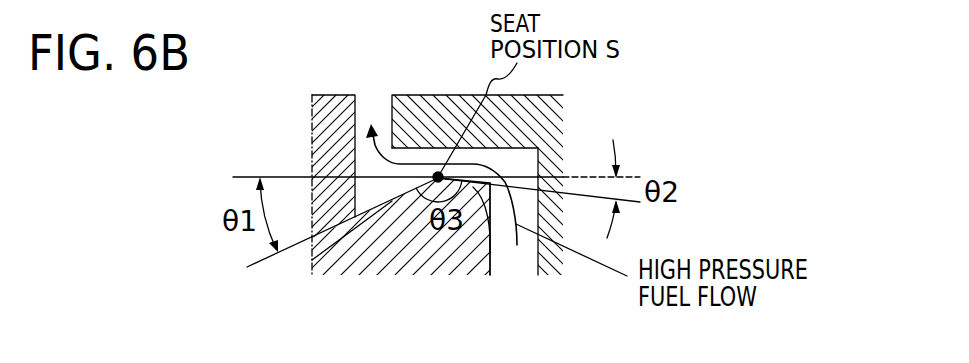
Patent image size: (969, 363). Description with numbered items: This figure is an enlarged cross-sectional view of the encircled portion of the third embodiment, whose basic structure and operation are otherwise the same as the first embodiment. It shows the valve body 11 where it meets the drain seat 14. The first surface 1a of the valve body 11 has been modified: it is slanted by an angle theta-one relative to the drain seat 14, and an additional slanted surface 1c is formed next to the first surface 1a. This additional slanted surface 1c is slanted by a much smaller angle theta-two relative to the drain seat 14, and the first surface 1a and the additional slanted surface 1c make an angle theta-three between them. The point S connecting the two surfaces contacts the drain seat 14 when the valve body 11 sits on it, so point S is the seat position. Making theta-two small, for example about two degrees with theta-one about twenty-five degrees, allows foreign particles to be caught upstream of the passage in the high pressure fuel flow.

The drain seat 14 is at (428, 148).
The first surface 1a is at (391, 199).
The valve body 11 is at (457, 258).
The additional slanted surface 1c is at (490, 253).